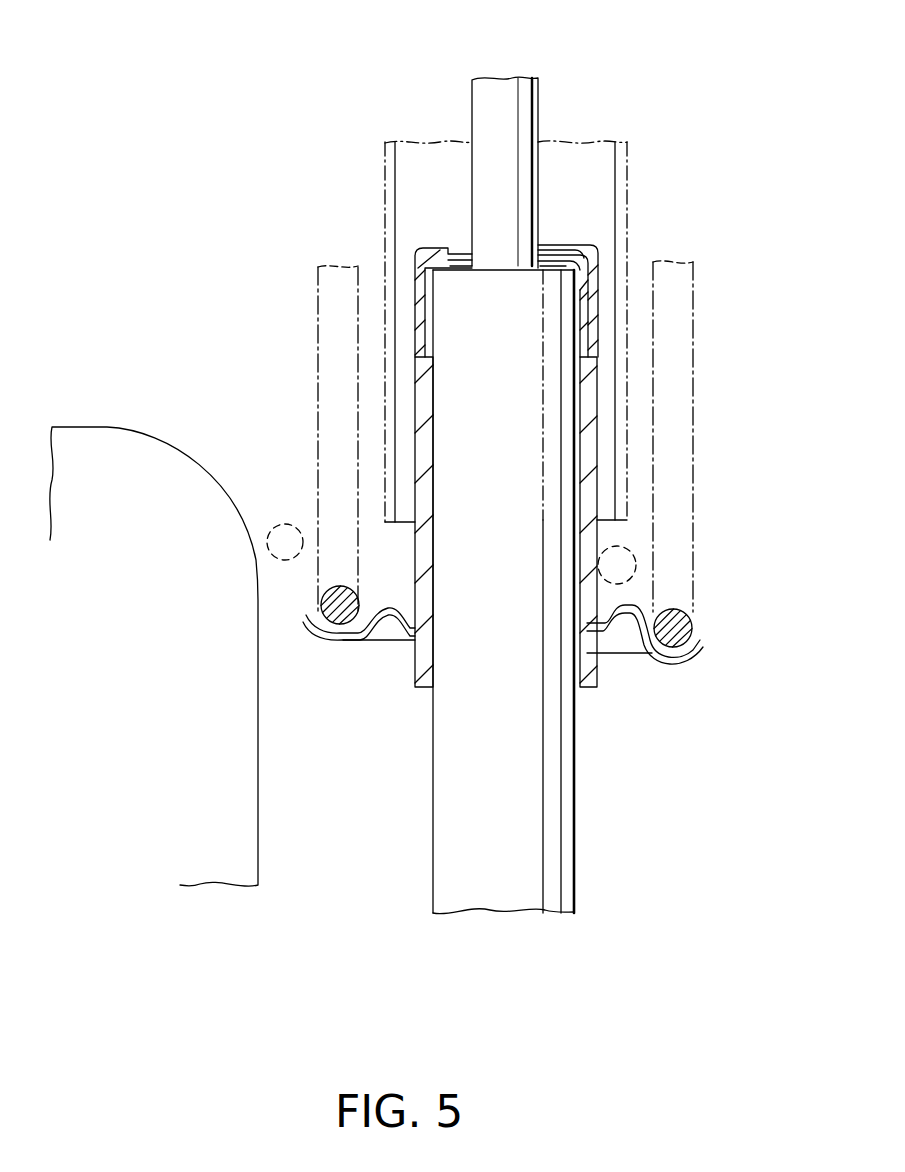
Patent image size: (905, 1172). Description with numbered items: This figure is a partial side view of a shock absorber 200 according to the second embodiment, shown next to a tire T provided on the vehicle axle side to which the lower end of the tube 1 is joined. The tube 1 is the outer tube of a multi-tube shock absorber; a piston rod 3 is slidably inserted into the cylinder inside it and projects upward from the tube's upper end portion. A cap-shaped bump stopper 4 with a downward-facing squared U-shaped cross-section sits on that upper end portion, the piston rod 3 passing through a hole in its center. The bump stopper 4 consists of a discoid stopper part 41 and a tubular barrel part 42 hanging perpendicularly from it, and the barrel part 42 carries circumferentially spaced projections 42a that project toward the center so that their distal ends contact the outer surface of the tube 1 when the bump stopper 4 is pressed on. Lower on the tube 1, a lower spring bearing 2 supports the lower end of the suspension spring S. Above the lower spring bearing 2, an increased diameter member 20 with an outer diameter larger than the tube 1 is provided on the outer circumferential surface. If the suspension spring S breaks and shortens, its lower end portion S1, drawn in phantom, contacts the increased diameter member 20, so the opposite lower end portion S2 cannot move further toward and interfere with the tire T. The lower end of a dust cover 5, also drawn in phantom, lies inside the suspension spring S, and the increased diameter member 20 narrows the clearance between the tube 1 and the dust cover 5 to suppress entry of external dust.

The shock absorber 200 is at (572, 108).
The tube 1 is at (433, 818).
The lower spring bearing 2 is at (402, 640).
The piston rod 3 is at (470, 168).
The bump stopper 4 is at (565, 240).
The dust cover 5 is at (625, 212).
The increased diameter member 20 is at (607, 394).
The stopper part 41 is at (443, 248).
The barrel part 42 is at (415, 316).
The projections 42a is at (582, 297).
The suspension spring S is at (705, 615).
The lower end portion of the broken suspension spring S1 is at (636, 566).
The lower end portion of the broken suspension spring at the tire side S2 is at (275, 562).
The tire T is at (107, 425).